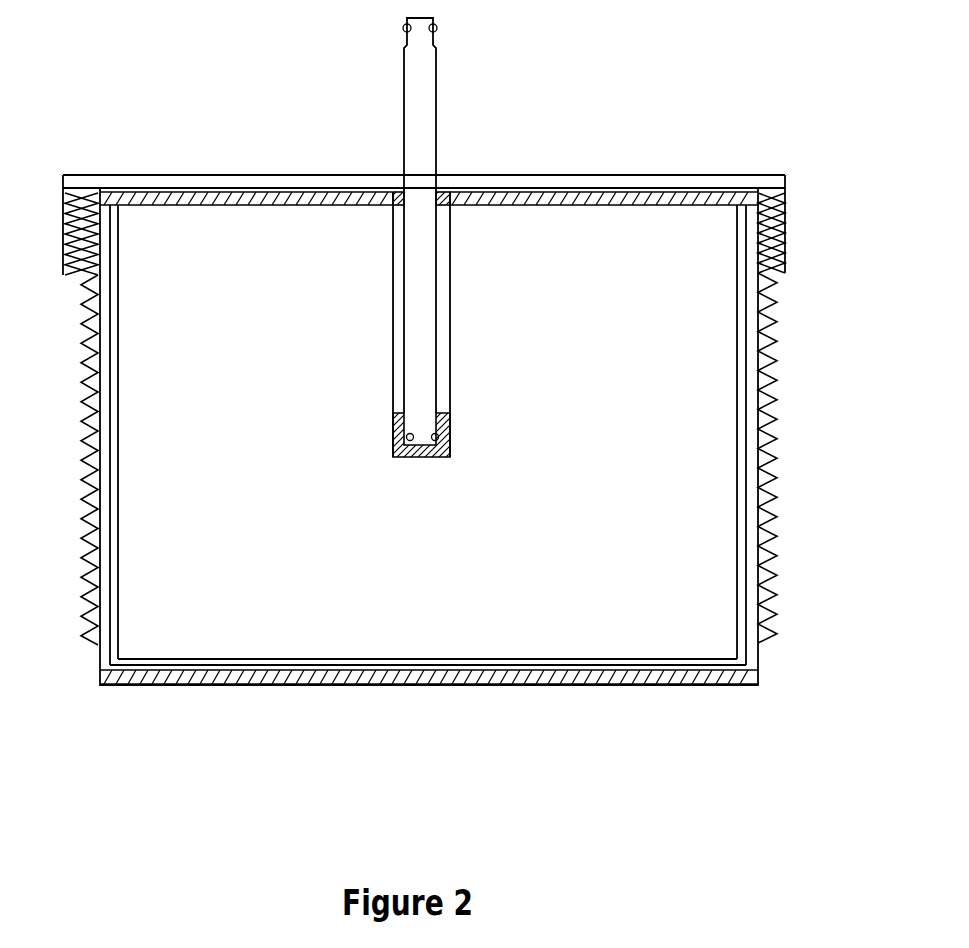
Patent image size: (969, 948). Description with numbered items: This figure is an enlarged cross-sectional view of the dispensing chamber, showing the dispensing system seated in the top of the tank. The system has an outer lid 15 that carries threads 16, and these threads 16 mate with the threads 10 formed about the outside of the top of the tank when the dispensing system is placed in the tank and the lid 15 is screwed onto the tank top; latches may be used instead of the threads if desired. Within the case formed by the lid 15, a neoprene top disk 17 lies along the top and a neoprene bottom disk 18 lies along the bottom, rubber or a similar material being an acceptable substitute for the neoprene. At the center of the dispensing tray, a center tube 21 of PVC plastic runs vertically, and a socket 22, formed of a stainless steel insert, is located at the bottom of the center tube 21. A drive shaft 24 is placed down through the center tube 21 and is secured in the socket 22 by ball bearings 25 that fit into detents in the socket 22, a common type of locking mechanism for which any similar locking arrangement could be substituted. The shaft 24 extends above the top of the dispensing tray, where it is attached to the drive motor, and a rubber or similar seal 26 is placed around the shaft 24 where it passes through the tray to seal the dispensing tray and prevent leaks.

The threads 10 is at (767, 418).
The outer lid 15 is at (618, 171).
The threads 16 is at (785, 273).
The neoprene top disk 17 is at (572, 212).
The neoprene bottom disk 18 is at (490, 688).
The center tube 21 is at (452, 357).
The socket 22 is at (410, 455).
The drive shaft 24 is at (402, 108).
The ball bearings 25 is at (400, 29).
The seal 26 is at (390, 206).